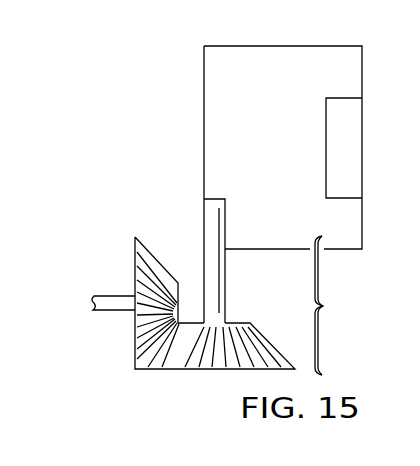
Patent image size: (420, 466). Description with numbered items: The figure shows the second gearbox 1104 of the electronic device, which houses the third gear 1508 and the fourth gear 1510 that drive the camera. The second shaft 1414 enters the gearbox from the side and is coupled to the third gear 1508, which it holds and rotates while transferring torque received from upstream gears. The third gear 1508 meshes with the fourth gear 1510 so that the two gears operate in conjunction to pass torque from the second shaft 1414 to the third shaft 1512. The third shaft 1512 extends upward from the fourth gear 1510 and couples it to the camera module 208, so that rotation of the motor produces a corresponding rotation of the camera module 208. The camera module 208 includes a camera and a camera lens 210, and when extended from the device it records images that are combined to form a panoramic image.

The camera module 208 is at (302, 97).
The camera lens 210 is at (326, 147).
The third shaft 1512 is at (226, 272).
The third gear 1508 is at (135, 268).
The fourth gear 1510 is at (178, 363).
The second shaft 1414 is at (107, 312).
The second gearbox 1104 is at (345, 305).